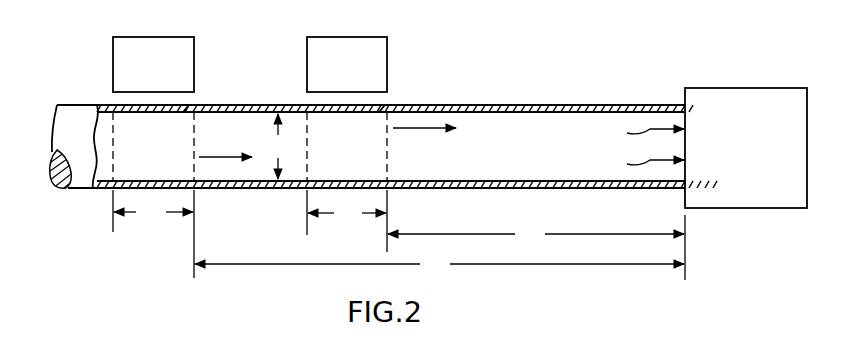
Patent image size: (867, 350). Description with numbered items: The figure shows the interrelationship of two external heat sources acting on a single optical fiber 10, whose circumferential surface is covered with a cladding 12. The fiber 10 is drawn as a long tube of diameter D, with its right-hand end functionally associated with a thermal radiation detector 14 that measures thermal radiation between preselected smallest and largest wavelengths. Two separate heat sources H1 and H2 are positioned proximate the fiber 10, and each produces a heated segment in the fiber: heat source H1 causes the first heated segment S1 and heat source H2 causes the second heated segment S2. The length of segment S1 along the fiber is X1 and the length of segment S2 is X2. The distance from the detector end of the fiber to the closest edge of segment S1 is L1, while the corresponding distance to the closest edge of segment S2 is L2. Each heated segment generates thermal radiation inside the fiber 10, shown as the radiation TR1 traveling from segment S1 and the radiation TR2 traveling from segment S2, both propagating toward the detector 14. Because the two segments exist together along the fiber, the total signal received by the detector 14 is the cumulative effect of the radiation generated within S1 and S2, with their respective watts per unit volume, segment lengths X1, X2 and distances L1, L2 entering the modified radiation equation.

The optical fiber 10 is at (380, 149).
The cladding 12 is at (236, 104).
The thermal radiation detector 14 is at (706, 88).
The first heat source H1 is at (388, 53).
The second heat source H2 is at (194, 54).
The first heated segment S1 is at (380, 113).
The second heated segment S2 is at (185, 112).
The thermal radiation from first heated segment TR1 is at (414, 129).
The thermal radiation from second heated segment TR2 is at (216, 157).
The fiber diameter D is at (278, 146).
The length of first heated segment X1 is at (347, 214).
The length of second heated segment X2 is at (153, 214).
The distance from fiber end to first heated segment L1 is at (536, 236).
The distance from fiber end to second heated segment L2 is at (439, 264).